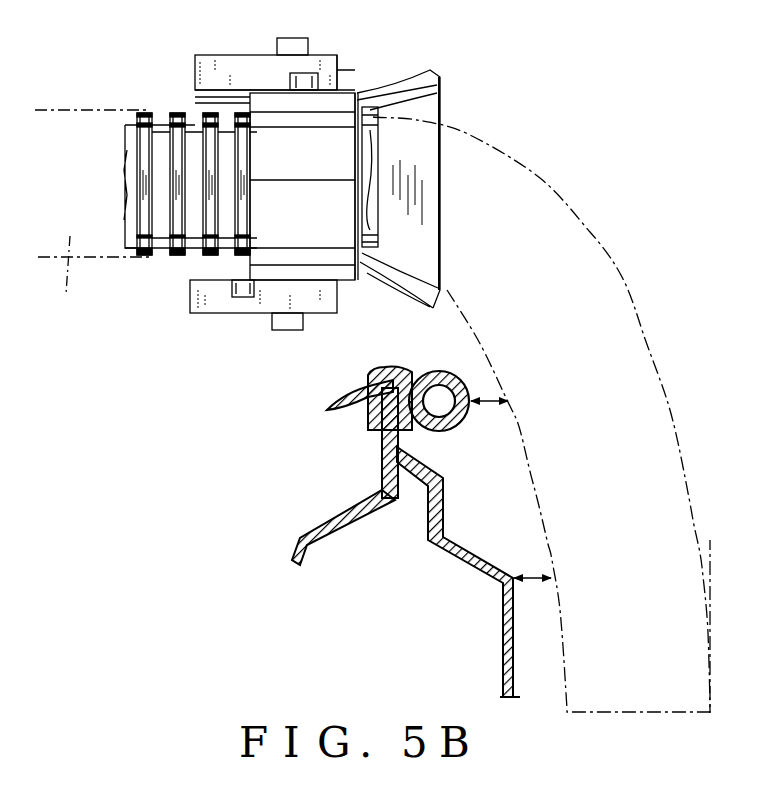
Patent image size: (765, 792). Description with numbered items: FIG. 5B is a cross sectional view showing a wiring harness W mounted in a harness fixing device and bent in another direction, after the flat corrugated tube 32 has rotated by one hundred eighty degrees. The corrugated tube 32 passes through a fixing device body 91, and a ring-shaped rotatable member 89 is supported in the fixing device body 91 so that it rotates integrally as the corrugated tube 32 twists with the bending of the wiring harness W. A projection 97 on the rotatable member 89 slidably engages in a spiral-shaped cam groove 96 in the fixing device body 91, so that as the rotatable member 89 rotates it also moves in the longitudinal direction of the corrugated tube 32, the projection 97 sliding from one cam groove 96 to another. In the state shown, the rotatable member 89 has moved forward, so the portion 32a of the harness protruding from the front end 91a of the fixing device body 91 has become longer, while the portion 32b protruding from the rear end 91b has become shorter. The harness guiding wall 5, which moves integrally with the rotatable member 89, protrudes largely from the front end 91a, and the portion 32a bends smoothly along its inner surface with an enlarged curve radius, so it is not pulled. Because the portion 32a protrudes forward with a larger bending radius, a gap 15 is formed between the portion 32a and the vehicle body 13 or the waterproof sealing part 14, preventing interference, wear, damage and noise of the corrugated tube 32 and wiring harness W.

The harness guiding wall 5 is at (443, 70).
The vehicle body 13 is at (512, 640).
The waterproof sealing part 14 is at (445, 428).
The gap 15 is at (500, 416).
The flat corrugated tube 32 is at (148, 110).
The portion of the harness protruded from the front end 32a is at (497, 212).
The portion of the harness protruded from the rear end 32b is at (92, 228).
The rotatable member 89 is at (283, 255).
The fixing device body 91 is at (330, 49).
The front end of the fixing device body 91a is at (340, 70).
The rear end of the fixing device body 91b is at (195, 70).
The cam groove 96 is at (240, 297).
The projection 97 is at (295, 75).
The wiring harness W is at (624, 272).